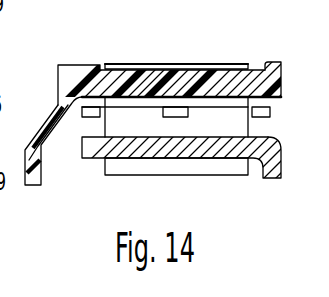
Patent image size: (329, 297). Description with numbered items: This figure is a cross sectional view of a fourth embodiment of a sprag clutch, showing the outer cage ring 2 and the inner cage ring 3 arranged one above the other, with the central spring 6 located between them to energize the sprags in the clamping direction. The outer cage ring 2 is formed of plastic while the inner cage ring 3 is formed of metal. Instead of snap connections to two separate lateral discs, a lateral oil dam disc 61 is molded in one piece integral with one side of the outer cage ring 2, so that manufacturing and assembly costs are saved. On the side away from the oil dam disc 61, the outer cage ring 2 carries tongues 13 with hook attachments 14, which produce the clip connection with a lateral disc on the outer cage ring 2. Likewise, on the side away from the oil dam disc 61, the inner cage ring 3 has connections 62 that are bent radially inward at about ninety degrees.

The outer cage ring 2 is at (163, 82).
The inner cage ring 3 is at (183, 148).
The central spring 6 is at (132, 108).
The tongues 13 is at (260, 78).
The hook attachments 14 is at (274, 63).
The lateral oil dam disc 61 is at (40, 129).
The connections 62 is at (266, 172).